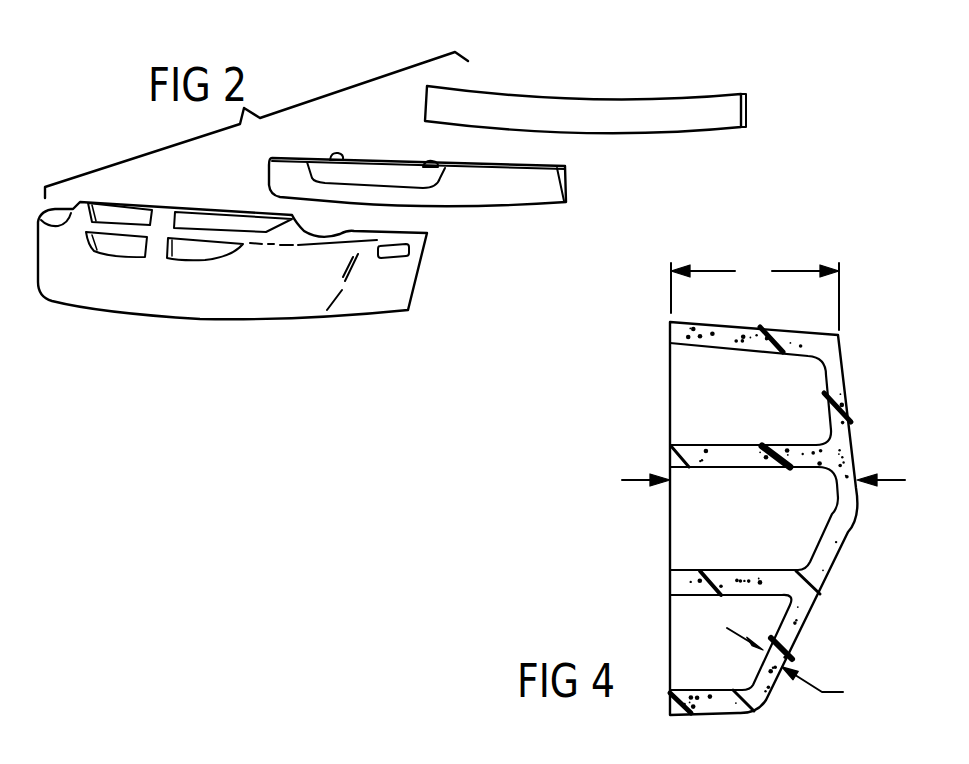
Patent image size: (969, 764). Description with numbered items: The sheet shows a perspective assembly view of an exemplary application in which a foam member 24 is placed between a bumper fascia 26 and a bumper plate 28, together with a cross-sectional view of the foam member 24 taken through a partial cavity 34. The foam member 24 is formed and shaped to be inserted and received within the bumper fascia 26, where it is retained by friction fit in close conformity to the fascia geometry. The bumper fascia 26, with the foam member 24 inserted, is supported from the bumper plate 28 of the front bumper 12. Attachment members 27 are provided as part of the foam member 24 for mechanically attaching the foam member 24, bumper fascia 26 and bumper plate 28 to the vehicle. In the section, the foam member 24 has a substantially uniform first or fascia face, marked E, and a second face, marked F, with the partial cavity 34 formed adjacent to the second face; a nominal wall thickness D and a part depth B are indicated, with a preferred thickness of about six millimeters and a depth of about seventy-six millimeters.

In FIG. 2, the front bumper 12 is at (658, 56).
In FIG. 2, the foam member 24 is at (455, 156).
In FIG. 4, the foam member 24 is at (838, 363).
In FIG. 2, the bumper fascia 26 is at (401, 286).
In FIG. 2, the attachment members 27 is at (430, 163).
In FIG. 2, the bumper plate 28 is at (700, 113).
In FIG. 4, the partial cavity 34 is at (698, 622).